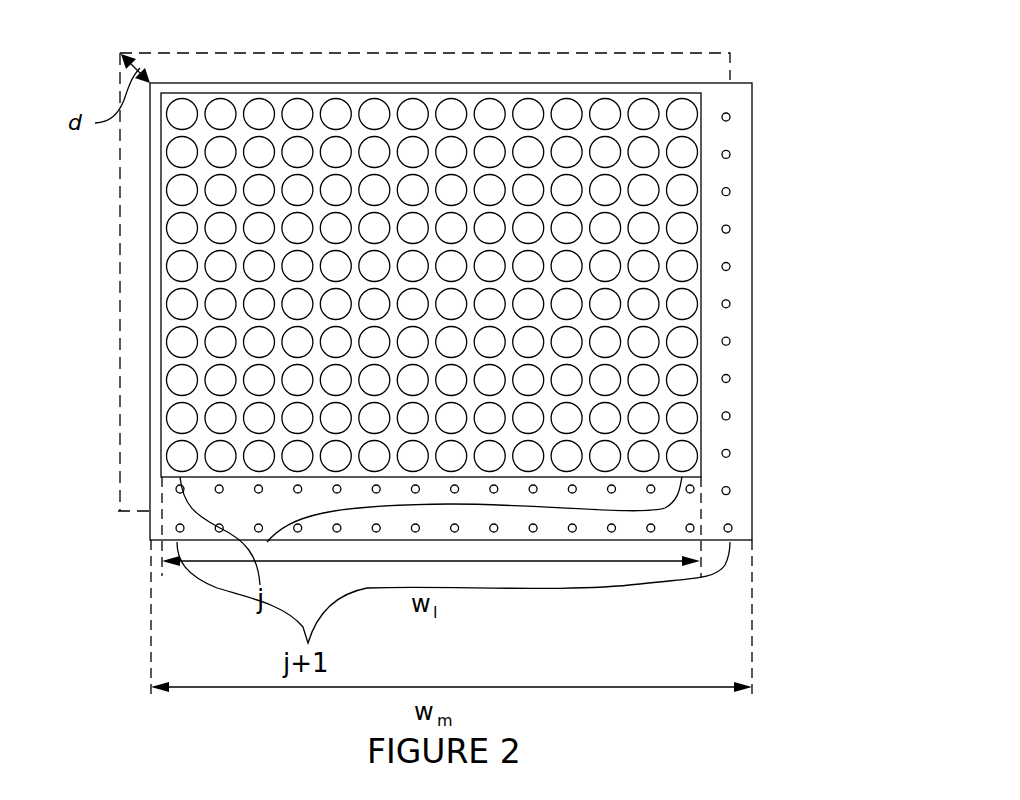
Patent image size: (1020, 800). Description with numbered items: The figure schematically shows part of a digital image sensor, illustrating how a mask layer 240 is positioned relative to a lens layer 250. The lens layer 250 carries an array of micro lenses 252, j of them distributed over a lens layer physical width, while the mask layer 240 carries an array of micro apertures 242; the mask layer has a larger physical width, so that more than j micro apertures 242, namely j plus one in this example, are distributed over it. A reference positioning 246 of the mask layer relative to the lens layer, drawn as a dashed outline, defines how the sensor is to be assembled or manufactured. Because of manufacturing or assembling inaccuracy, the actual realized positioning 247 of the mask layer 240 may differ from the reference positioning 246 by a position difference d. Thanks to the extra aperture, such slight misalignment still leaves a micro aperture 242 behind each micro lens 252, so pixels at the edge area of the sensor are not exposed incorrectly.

The mask layer 240 is at (510, 286).
The realized positioning of the mask layer 247 is at (740, 83).
The lens layer 250 is at (490, 285).
The micro lenses 252 is at (693, 242).
The micro apertures 242 is at (730, 307).
The reference positioning 246 is at (121, 202).